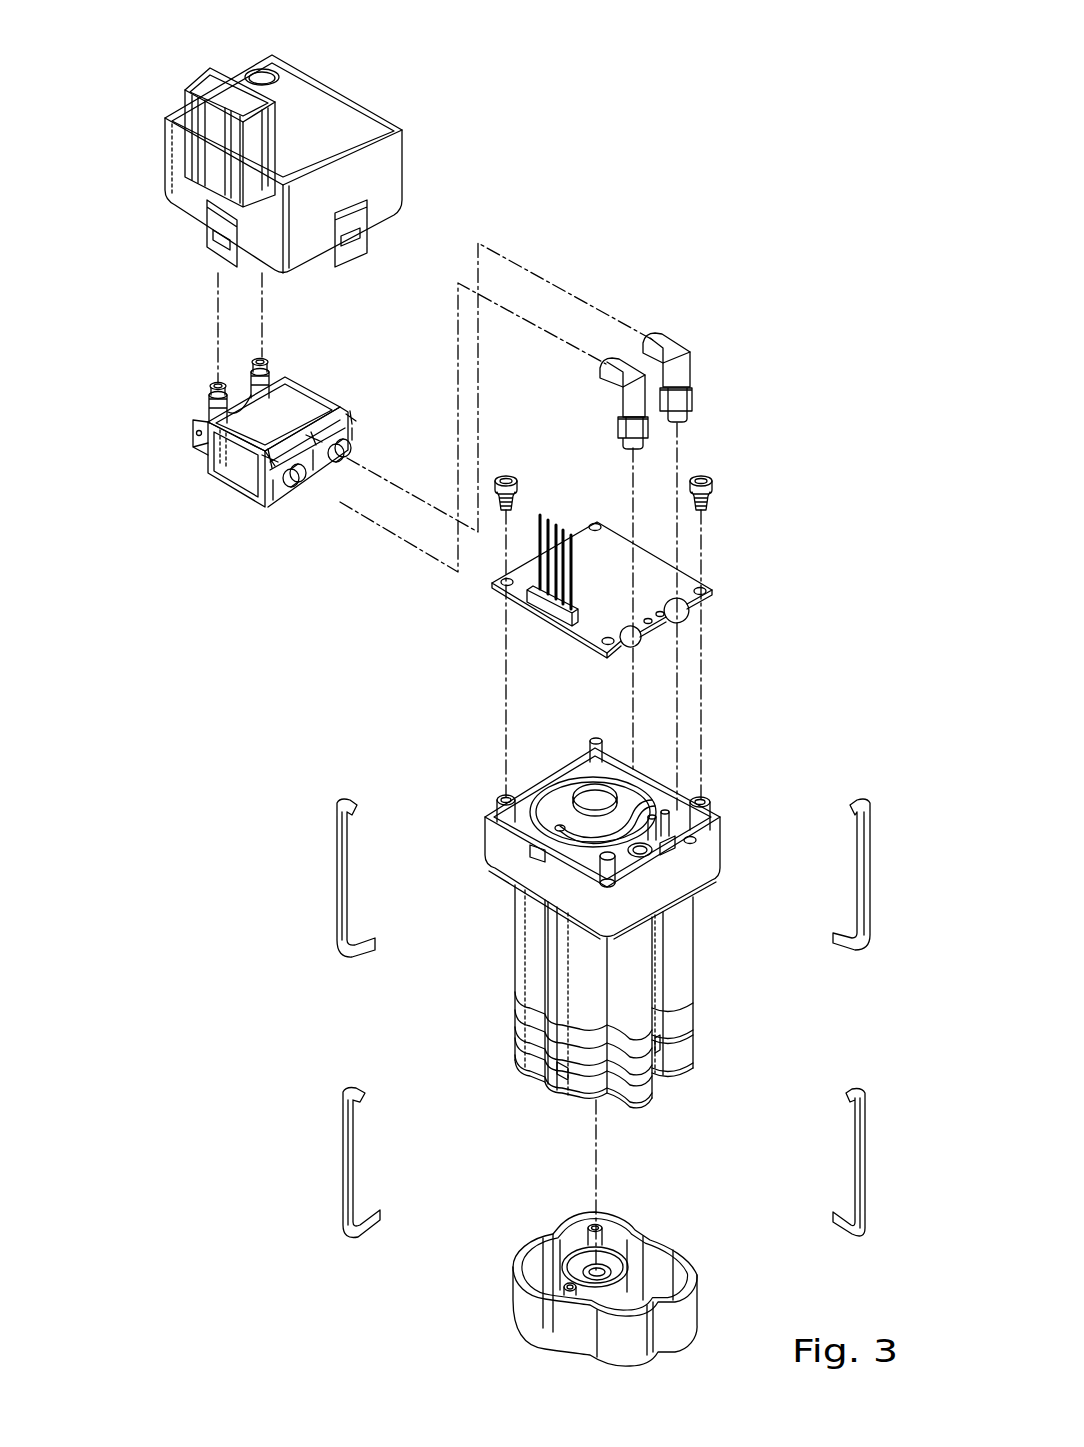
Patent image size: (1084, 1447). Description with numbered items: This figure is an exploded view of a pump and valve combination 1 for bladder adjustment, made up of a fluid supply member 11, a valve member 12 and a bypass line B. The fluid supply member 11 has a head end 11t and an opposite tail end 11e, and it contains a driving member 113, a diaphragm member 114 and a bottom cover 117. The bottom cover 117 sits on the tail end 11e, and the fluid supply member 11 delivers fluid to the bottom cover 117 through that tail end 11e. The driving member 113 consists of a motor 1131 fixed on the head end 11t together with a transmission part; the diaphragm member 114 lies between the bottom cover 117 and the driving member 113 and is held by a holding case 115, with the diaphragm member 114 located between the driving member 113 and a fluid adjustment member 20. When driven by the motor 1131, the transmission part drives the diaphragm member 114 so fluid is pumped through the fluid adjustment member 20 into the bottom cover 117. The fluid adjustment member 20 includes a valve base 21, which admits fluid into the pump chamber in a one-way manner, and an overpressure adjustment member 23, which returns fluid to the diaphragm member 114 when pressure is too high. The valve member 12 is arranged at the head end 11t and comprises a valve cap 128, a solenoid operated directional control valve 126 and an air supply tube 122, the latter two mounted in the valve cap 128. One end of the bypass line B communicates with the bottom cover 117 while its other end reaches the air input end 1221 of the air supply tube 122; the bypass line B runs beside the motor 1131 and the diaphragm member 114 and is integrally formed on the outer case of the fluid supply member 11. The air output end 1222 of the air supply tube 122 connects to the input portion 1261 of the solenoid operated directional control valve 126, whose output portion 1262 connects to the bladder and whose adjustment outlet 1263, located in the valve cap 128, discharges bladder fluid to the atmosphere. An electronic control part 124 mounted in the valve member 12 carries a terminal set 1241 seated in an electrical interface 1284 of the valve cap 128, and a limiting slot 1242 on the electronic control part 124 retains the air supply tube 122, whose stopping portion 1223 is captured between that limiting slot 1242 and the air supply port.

The pump and valve combination 1 is at (768, 140).
The fluid supply member 11 is at (586, 915).
The head end 11t is at (600, 832).
The tail end 11e is at (678, 1080).
The driving member 113 is at (586, 1006).
The diaphragm member 114 is at (515, 1010).
The holding case 115 is at (515, 992).
The bottom cover 117 is at (714, 1296).
The motor 1131 is at (550, 790).
The valve member 12 is at (603, 212).
The air supply tube 122 is at (662, 363).
The air input end 1221 is at (642, 449).
The air output end 1222 is at (652, 336).
The stopping portion 1223 is at (617, 428).
The electronic control part 124 is at (645, 580).
The terminal set 1241 is at (543, 513).
The limiting slot 1242 is at (645, 634).
The solenoid operated directional control valve 126 is at (232, 441).
The input portion 1261 is at (343, 468).
The output portion 1262 is at (260, 357).
The adjustment outlet 1263 is at (196, 436).
The valve cap 128 is at (250, 58).
The electrical interface 1284 is at (200, 80).
The fluid adjustment member 20 is at (540, 1089).
The valve base 21 is at (514, 1031).
The overpressure adjustment member 23 is at (535, 1078).
The bypass line B is at (650, 988).